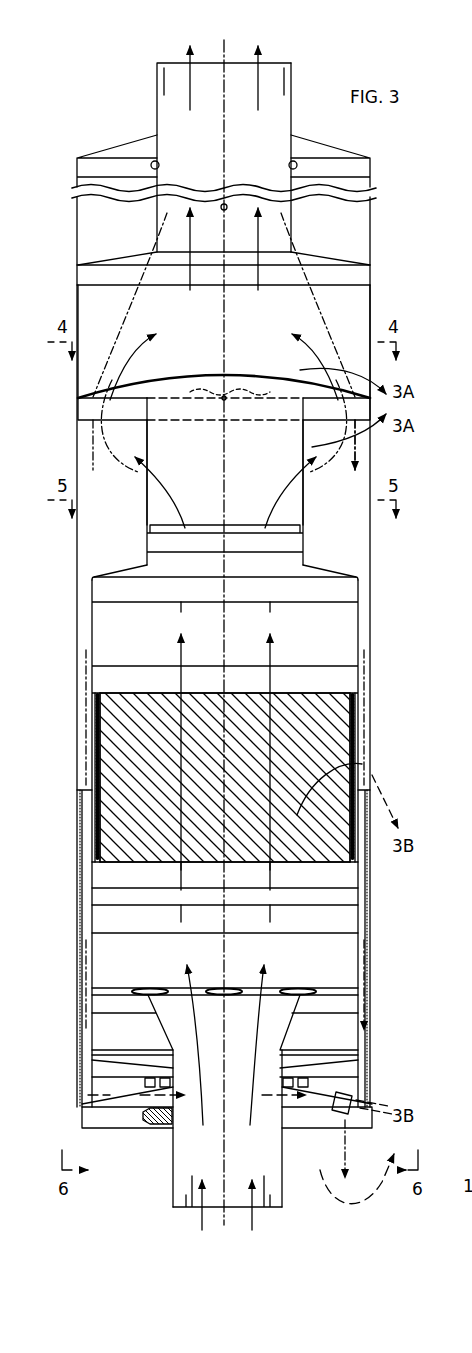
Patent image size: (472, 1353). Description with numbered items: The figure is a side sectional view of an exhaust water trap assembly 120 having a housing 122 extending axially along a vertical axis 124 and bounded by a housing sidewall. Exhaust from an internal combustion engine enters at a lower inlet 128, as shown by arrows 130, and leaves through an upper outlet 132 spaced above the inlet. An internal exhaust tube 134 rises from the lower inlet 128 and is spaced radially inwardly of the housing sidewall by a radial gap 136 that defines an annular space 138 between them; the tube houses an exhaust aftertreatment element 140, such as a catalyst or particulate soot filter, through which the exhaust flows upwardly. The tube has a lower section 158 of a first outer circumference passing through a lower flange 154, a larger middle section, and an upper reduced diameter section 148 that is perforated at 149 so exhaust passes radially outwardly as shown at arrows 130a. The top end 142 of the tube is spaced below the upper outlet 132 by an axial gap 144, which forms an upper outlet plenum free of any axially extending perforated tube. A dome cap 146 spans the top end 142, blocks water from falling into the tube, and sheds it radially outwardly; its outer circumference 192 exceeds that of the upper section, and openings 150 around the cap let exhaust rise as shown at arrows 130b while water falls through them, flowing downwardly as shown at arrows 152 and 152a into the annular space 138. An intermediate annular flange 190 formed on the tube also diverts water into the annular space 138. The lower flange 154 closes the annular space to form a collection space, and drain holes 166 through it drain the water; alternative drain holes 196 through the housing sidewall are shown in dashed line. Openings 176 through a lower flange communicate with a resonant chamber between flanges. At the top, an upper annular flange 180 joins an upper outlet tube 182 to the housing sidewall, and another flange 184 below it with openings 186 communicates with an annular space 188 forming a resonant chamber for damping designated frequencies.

The exhaust water trap assembly 120 is at (64, 160).
The housing 122 is at (77, 168).
The vertical axis 124 is at (222, 48).
The lower inlet 128 is at (175, 1207).
The arrows 130 is at (260, 66).
The arrows 130a is at (318, 454).
The arrows 130b is at (302, 336).
The upper outlet 132 is at (157, 66).
The internal exhaust tube 134 is at (92, 592).
The radial gap 136 is at (80, 620).
The annular space 138 is at (362, 599).
The exhaust aftertreatment element 140 is at (114, 706).
The top end 142 is at (172, 403).
The axial gap 144 is at (199, 329).
The dome cap 146 is at (224, 378).
The upper reduced diameter section 148 is at (303, 473).
The perforations 149 is at (147, 505).
The openings 150 is at (312, 384).
The arrows 152 is at (358, 456).
The arrows 152a is at (358, 718).
The lower flange 154 is at (118, 1100).
The lower section 158 is at (173, 1163).
The drain holes 166 is at (342, 1116).
The openings 176 is at (306, 988).
The upper annular flange 180 is at (322, 150).
The upper outlet tube 182 is at (292, 110).
The flange 184 is at (348, 262).
The openings 186 is at (118, 264).
The annular space 188 is at (343, 239).
The intermediate annular flange 190 is at (308, 566).
The outer circumference 192 is at (88, 398).
The drain holes 196 is at (354, 1104).